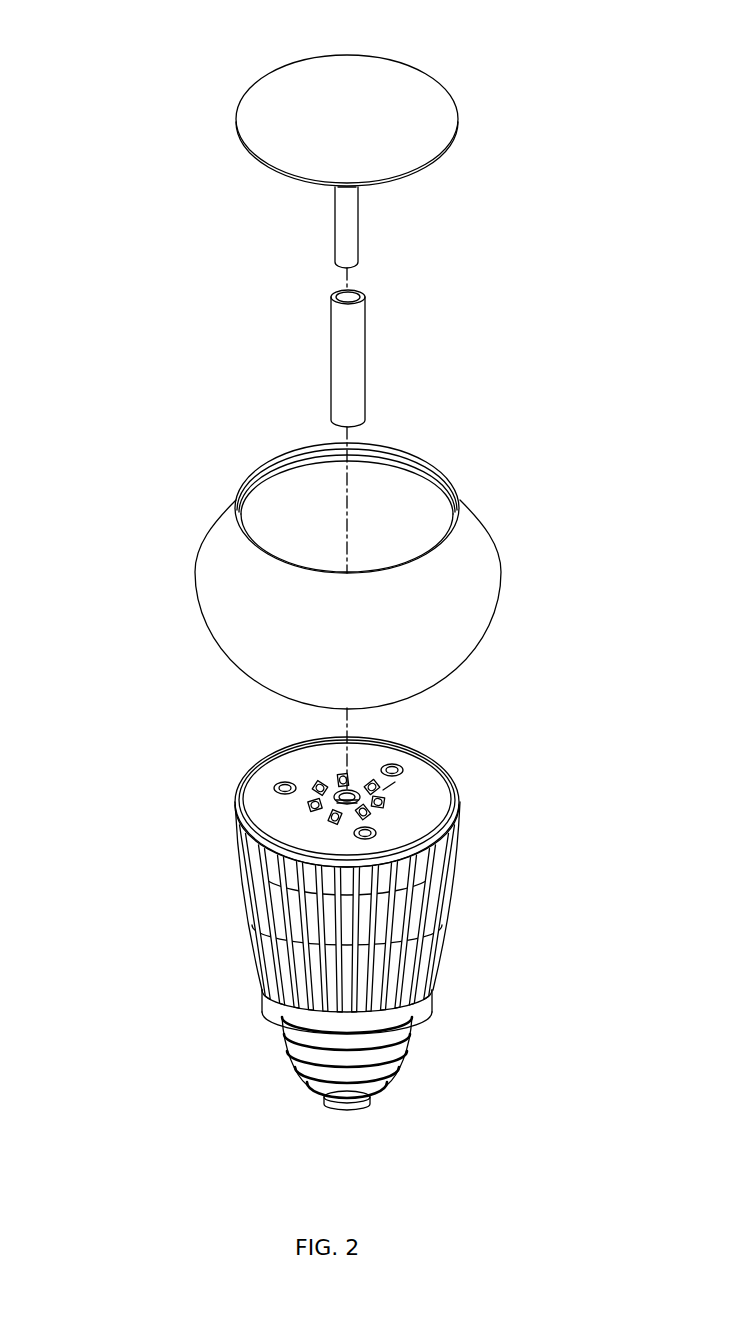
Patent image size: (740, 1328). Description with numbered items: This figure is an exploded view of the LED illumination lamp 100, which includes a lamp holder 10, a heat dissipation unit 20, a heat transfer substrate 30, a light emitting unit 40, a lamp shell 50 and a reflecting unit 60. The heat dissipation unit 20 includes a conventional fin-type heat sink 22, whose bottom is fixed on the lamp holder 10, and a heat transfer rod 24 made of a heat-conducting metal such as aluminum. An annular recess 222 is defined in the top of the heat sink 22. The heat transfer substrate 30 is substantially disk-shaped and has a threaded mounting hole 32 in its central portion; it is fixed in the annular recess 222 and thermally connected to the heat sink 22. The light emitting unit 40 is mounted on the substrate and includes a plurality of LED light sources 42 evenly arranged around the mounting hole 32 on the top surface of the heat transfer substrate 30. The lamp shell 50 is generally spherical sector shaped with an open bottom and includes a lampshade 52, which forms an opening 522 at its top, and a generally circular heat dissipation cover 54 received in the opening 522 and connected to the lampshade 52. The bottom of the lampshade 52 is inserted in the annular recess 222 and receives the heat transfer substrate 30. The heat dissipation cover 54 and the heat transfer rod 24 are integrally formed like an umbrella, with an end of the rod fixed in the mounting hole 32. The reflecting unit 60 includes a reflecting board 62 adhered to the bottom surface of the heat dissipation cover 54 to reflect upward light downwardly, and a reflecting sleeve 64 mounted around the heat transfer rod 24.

The LED illumination lamp 100 is at (375, 22).
The lamp holder 10 is at (283, 1050).
The heat dissipation unit 20 is at (418, 885).
The heat sink 22 is at (455, 887).
The annular recess 222 is at (454, 823).
The heat transfer rod 24 is at (343, 235).
The heat transfer substrate 30 is at (318, 776).
The mounting hole 32 is at (333, 784).
The light emitting unit 40 is at (384, 783).
The LED light sources 42 is at (390, 800).
The lamp shell 50 is at (321, 576).
The lampshade 52 is at (202, 583).
The opening 522 is at (453, 484).
The heat dissipation cover 54 is at (250, 122).
The reflecting unit 60 is at (469, 292).
The reflecting board 62 is at (410, 180).
The reflecting sleeve 64 is at (441, 358).